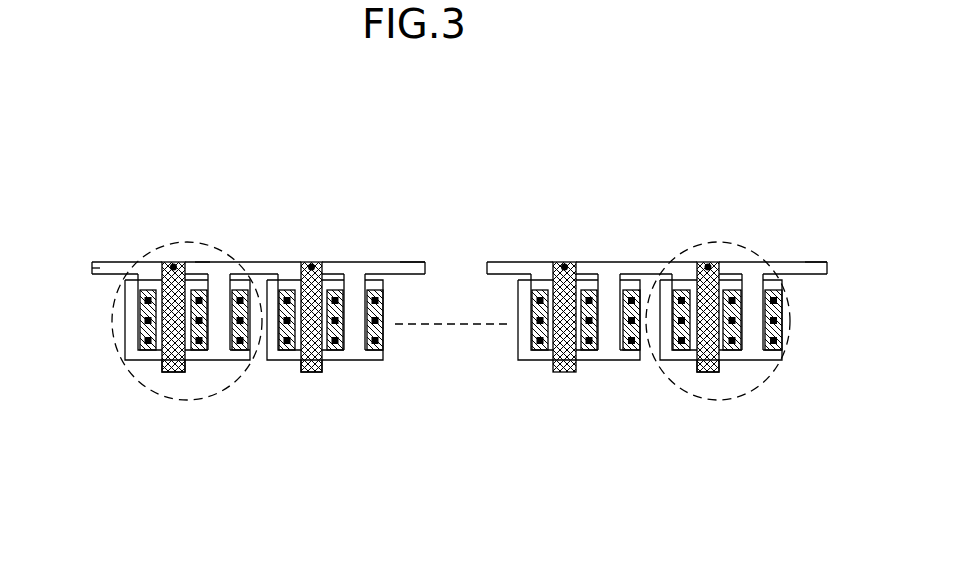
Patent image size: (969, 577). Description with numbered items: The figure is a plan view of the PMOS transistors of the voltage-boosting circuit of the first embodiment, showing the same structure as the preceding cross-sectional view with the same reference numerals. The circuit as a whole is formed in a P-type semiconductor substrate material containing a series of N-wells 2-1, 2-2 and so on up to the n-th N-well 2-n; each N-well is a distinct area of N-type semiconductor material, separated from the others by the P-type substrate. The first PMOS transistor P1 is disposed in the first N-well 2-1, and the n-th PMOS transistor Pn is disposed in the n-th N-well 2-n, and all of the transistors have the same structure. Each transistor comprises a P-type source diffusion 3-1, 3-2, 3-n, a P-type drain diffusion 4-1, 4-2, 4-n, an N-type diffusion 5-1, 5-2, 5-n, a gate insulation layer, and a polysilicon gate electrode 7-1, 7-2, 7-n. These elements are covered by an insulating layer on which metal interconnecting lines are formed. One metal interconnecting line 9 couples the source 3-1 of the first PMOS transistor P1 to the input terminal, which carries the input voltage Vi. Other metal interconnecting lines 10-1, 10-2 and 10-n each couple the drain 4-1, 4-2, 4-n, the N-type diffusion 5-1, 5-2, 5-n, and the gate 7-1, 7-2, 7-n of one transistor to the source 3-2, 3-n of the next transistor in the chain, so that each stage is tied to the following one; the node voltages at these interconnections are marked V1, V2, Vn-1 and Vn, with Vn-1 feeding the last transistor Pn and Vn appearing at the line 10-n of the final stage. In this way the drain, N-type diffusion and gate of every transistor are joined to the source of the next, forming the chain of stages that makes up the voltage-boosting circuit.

The metal interconnecting line 9 is at (100, 261).
The input voltage Vi is at (77, 264).
The first stage voltage V1 is at (203, 264).
The second stage voltage V2 is at (405, 263).
The (n-1)th stage voltage Vn-1 is at (592, 275).
The nth stage voltage Vn is at (813, 263).
The N-well 2-1 is at (130, 352).
The N-well 2-2 is at (280, 360).
The N-well 2-n is at (670, 360).
The P-type source diffusion 3-1 is at (155, 289).
The P-type source diffusion 3-2 is at (289, 280).
The P-type source diffusion 3-n is at (683, 280).
The P-type drain diffusion 4-1 is at (193, 278).
The P-type drain diffusion 4-2 is at (328, 278).
The P-type drain diffusion 4-n is at (722, 278).
The N-type diffusion 5-1 is at (240, 350).
The N-type diffusion 5-2 is at (382, 348).
The N-type diffusion 5-n is at (783, 335).
The polysilicon gate electrode 7-1 is at (172, 373).
The polysilicon gate electrode 7-2 is at (312, 373).
The polysilicon gate electrode 7-n is at (720, 373).
The metal interconnecting line 10-1 is at (222, 275).
The metal interconnecting line 10-2 is at (358, 275).
The metal interconnecting line 10-n is at (790, 262).
The PMOS transistor P1 is at (140, 385).
The PMOS transistor Pn is at (698, 398).